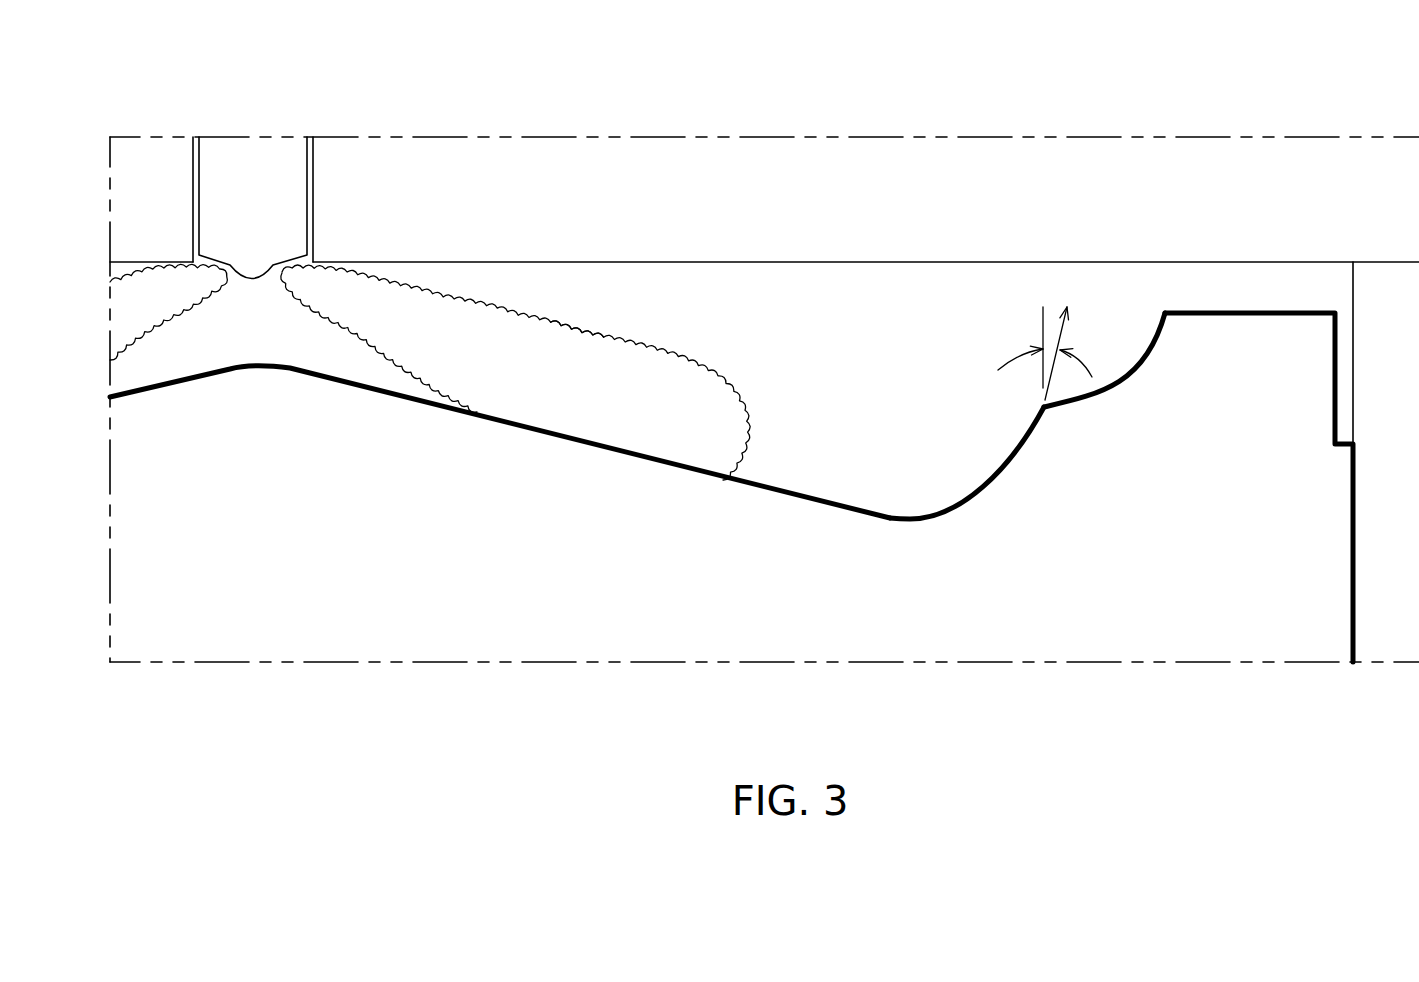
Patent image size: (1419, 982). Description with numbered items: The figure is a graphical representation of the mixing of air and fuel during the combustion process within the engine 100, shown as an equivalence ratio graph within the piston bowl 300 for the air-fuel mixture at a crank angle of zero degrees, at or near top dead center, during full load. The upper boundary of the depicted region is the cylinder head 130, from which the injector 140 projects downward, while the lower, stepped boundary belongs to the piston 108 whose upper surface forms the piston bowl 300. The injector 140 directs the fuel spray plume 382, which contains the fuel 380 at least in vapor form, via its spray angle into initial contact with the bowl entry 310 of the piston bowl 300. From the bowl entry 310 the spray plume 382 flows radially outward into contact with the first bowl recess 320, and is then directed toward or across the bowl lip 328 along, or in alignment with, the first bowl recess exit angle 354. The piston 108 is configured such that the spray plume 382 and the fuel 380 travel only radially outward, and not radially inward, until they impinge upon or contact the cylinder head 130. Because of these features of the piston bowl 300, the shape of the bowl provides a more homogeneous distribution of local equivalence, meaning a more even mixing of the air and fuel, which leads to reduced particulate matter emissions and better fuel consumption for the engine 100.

The engine 100 is at (1018, 110).
The piston 108 is at (1184, 499).
The cylinder head 130 is at (730, 198).
The injector 140 is at (263, 192).
The piston bowl 300 is at (852, 330).
The bowl entry 310 is at (405, 400).
The first bowl recess 320 is at (905, 478).
The bowl lip 328 is at (1045, 412).
The first bowl recess exit angle 354 is at (1016, 355).
The fuel 380 is at (490, 358).
The fuel spray plume 382 is at (579, 318).